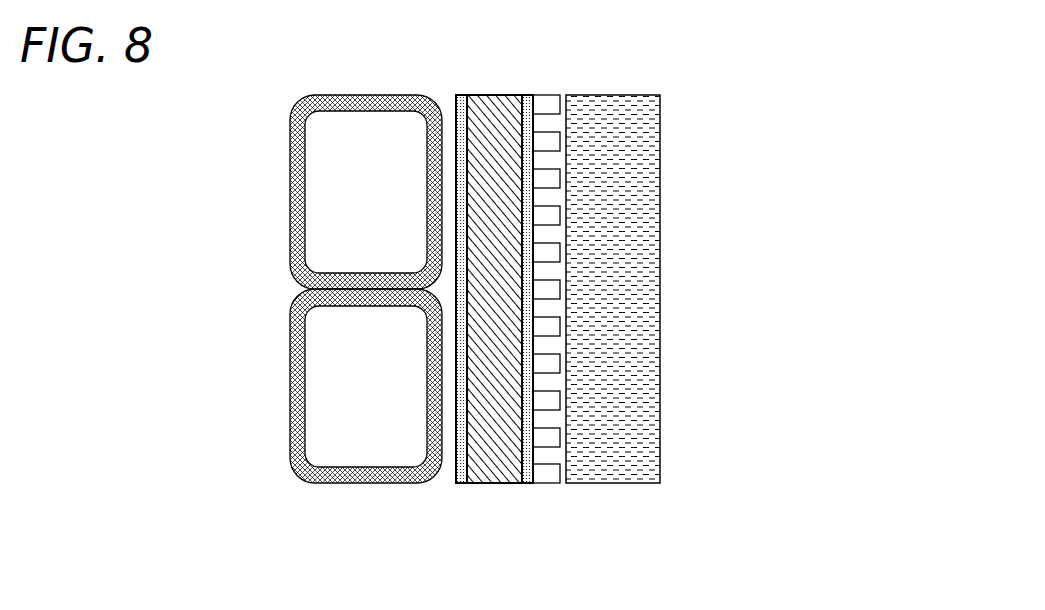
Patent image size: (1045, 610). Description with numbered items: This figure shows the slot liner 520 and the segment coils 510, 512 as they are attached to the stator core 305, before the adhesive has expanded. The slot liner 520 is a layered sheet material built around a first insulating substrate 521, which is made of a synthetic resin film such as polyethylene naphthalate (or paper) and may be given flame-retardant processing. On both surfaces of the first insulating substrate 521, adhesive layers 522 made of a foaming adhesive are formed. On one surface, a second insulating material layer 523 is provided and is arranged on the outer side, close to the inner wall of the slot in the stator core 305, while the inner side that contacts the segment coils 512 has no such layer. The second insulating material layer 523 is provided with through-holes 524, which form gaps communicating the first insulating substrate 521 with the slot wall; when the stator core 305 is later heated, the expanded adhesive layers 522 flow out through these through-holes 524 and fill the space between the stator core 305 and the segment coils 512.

The stator core 305 is at (639, 315).
The cooling pipe 510 is at (287, 140).
The segment coil 512 is at (317, 289).
The slot liner 520 is at (521, 290).
The first insulating substrate 521 is at (485, 93).
The adhesive layer 522 is at (458, 93).
The second insulating material layer 523 is at (552, 93).
The through-hole 524 is at (550, 122).